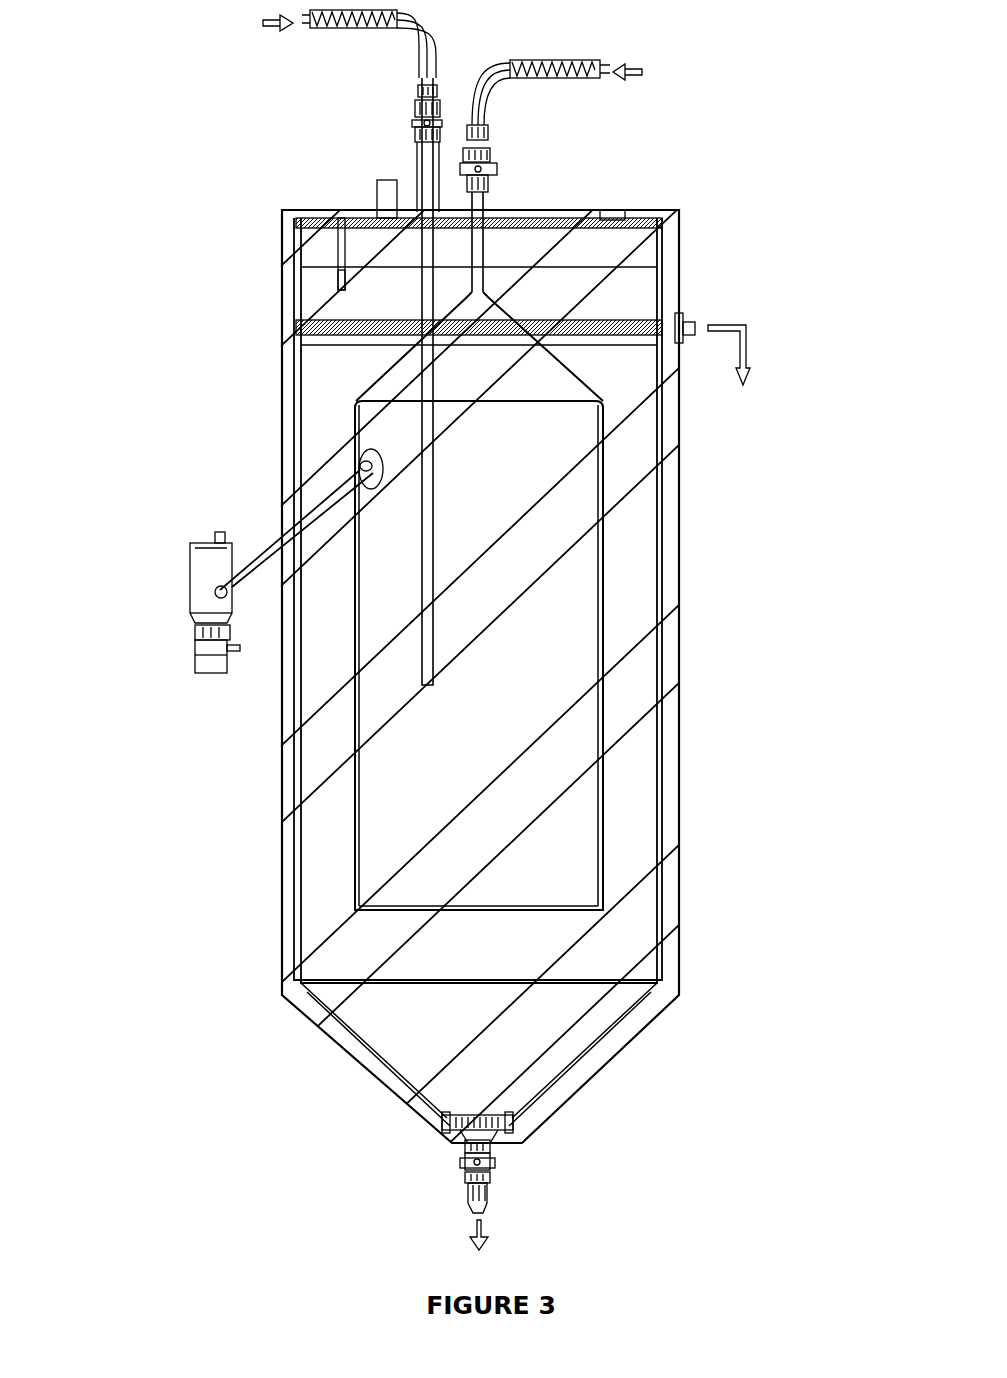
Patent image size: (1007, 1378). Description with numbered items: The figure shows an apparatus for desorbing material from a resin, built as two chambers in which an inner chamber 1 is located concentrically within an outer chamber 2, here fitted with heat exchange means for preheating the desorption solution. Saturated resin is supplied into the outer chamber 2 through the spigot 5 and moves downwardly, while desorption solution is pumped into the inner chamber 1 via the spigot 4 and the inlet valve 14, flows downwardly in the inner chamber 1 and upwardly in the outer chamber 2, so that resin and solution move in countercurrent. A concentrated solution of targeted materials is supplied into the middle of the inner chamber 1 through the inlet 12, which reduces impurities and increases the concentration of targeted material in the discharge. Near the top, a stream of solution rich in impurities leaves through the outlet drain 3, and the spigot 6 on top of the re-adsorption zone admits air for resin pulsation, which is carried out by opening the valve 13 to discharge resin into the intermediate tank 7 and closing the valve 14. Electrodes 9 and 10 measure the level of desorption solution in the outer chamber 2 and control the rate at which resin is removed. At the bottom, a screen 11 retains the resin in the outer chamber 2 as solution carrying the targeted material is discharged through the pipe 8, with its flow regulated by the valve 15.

The inner chamber 1 is at (607, 818).
The outer chamber 2 is at (670, 697).
The outlet drain 3 is at (686, 315).
The spigot 4 is at (480, 78).
The spigot 5 is at (385, 180).
The spigot 6 is at (628, 213).
The intermediate tank 7 is at (186, 583).
The pipe 8 is at (475, 1208).
The electrode 9 is at (335, 242).
The electrode 10 is at (337, 282).
The screen 11 is at (508, 1115).
The inlet 12 is at (407, 32).
The valve 13 is at (207, 652).
The inlet valve 14 is at (497, 165).
The valve 15 is at (502, 1160).